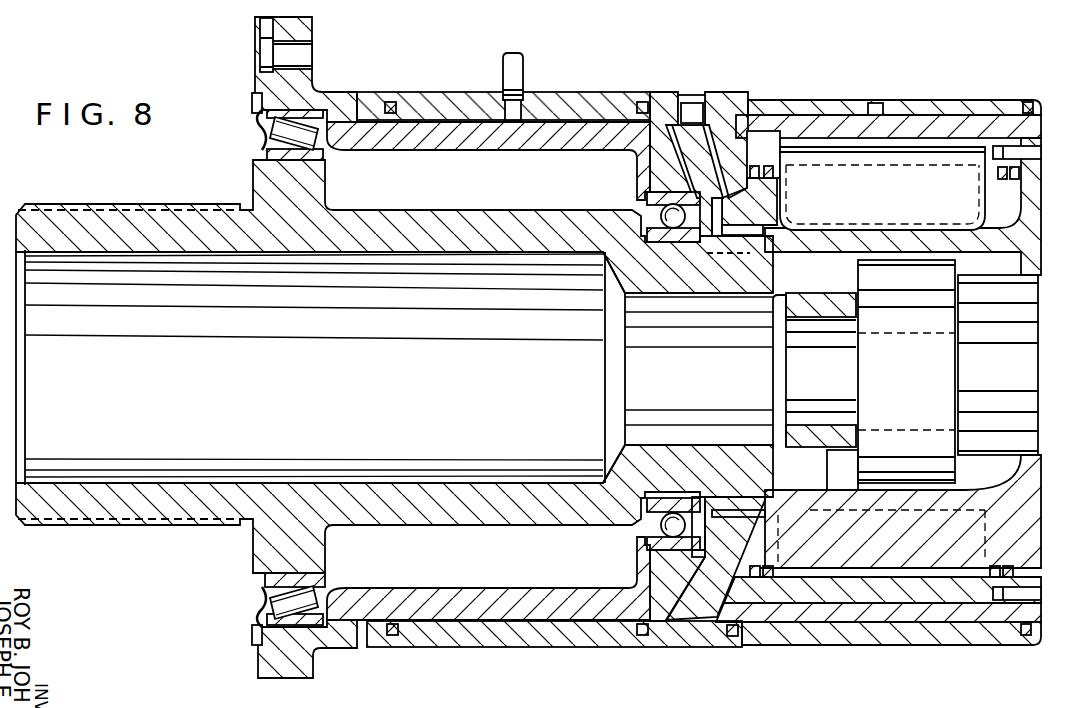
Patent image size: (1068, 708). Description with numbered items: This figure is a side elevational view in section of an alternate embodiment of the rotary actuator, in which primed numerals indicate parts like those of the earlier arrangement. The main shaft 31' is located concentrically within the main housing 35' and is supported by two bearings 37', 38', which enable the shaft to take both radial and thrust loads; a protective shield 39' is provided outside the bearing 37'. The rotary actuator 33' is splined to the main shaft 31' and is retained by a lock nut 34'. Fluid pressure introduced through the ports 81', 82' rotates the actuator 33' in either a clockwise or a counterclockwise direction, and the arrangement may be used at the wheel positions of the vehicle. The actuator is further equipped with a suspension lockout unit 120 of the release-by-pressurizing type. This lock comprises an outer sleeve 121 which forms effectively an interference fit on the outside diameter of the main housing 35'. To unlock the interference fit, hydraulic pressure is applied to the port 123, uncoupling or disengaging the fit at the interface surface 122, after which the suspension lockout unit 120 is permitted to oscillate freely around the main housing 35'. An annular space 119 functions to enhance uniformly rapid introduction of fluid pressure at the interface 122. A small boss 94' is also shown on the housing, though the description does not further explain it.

The main shaft 31' is at (394, 366).
The rotary actuator 33' is at (903, 319).
The lock nut 34' is at (905, 371).
The main housing 35' is at (421, 347).
The bearing 37' is at (261, 135).
The bearing 38' is at (673, 371).
The protective shield 39' is at (247, 600).
The port 81' is at (726, 340).
The port 82' is at (706, 102).
The boss 94' is at (866, 93).
The annular space 119 is at (633, 118).
The suspension lockout unit 120 is at (612, 92).
The outer sleeve 121 is at (432, 92).
The interface surface 122 is at (470, 117).
The port 123 is at (524, 74).